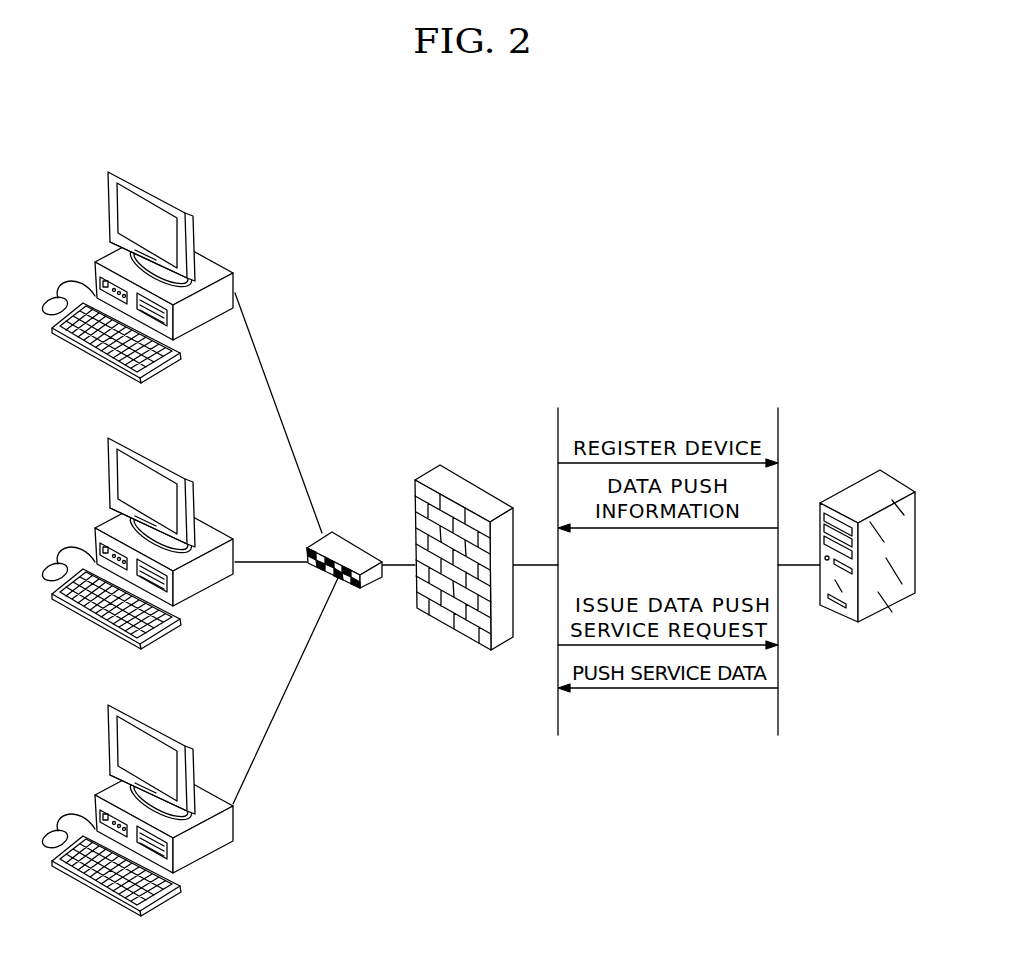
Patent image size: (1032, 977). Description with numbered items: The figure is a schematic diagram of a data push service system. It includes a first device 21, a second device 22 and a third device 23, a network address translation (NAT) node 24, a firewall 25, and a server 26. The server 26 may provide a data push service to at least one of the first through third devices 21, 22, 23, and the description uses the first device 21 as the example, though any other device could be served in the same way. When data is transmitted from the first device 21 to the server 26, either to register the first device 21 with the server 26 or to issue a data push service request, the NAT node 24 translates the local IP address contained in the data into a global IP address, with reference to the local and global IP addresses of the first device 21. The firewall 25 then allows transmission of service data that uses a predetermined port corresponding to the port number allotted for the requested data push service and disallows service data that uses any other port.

The first device 21 is at (177, 200).
The second device 22 is at (180, 470).
The third device 23 is at (180, 735).
The network address translation (NAT) node 24 is at (355, 540).
The firewall 25 is at (472, 483).
The server 26 is at (892, 473).